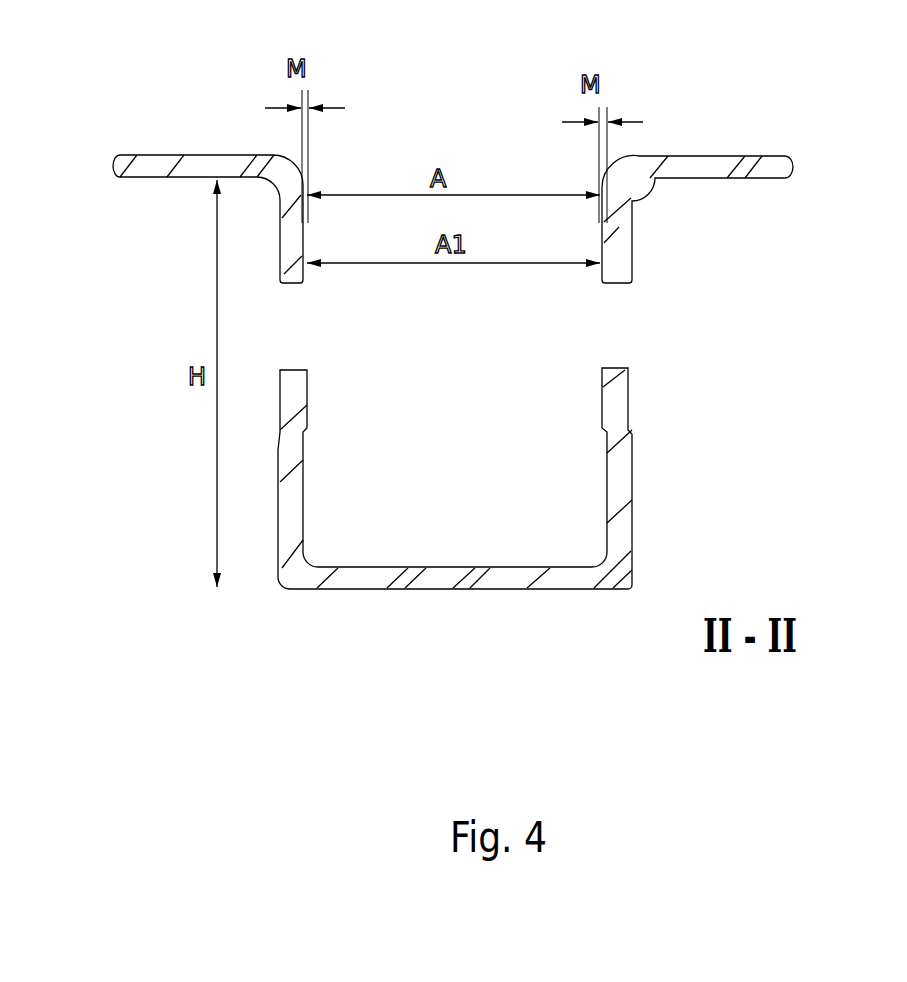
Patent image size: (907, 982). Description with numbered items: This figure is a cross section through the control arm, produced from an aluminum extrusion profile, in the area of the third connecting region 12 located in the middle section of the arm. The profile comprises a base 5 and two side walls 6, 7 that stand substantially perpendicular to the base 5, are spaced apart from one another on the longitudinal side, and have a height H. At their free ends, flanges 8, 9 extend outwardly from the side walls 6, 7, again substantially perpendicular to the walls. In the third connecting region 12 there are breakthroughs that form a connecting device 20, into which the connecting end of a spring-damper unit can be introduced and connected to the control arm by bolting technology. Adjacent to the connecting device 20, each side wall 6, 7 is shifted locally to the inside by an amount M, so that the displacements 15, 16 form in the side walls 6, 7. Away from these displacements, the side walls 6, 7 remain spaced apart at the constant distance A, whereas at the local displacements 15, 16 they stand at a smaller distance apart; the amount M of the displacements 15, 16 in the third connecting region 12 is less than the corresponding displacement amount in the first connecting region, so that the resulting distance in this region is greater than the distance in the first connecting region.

The base 5 is at (480, 586).
The side wall 6 is at (296, 495).
The side wall 7 is at (613, 502).
The flange 8 is at (193, 165).
The flange 9 is at (752, 165).
The third connecting region 12 is at (293, 642).
The displacement 15 is at (298, 247).
The displacement 16 is at (615, 252).
The connecting device 20 is at (297, 325).